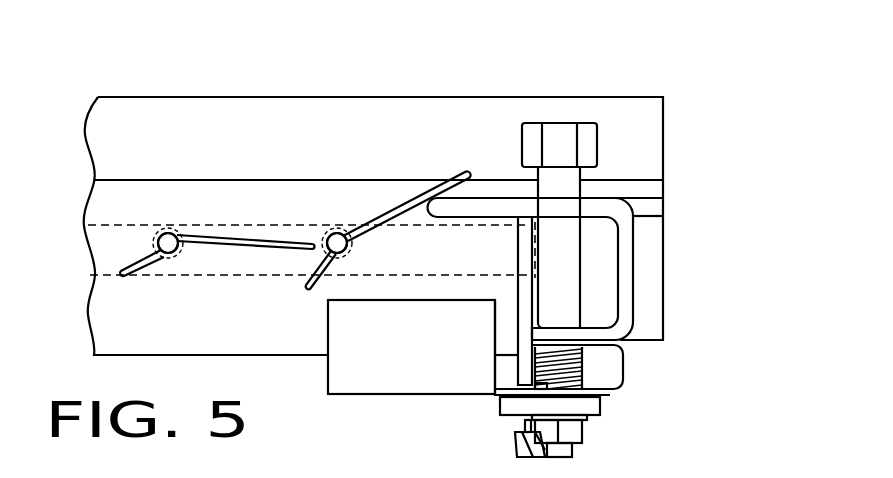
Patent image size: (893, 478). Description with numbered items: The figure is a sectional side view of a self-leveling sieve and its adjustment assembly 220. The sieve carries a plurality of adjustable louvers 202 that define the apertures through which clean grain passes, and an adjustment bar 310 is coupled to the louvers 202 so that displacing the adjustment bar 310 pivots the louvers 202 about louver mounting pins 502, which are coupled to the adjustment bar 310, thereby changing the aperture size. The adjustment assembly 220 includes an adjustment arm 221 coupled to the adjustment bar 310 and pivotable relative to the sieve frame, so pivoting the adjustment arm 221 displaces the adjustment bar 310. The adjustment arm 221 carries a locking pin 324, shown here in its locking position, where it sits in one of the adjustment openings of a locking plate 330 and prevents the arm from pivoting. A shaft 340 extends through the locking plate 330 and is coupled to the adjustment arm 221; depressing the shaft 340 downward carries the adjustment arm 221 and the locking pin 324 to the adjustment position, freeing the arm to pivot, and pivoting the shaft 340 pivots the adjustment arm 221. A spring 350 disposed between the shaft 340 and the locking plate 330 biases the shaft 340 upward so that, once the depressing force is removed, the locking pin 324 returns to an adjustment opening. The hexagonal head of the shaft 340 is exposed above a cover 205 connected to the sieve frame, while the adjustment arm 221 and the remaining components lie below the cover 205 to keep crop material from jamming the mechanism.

The adjustment bar 310 is at (203, 219).
The adjustable louvers 202 is at (357, 222).
The louver mounting pins 502 is at (168, 253).
The locking plate 330 is at (376, 380).
The cover 205 is at (635, 250).
The adjustment assembly 220 is at (611, 161).
The shaft 340 is at (583, 188).
The locking pin 324 is at (533, 389).
The spring 350 is at (588, 367).
The adjustment arm 221 is at (601, 408).